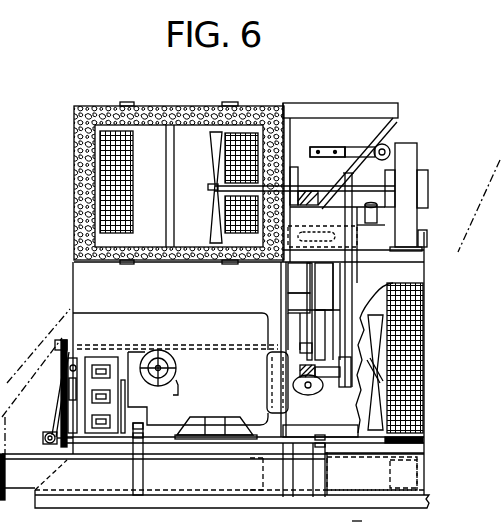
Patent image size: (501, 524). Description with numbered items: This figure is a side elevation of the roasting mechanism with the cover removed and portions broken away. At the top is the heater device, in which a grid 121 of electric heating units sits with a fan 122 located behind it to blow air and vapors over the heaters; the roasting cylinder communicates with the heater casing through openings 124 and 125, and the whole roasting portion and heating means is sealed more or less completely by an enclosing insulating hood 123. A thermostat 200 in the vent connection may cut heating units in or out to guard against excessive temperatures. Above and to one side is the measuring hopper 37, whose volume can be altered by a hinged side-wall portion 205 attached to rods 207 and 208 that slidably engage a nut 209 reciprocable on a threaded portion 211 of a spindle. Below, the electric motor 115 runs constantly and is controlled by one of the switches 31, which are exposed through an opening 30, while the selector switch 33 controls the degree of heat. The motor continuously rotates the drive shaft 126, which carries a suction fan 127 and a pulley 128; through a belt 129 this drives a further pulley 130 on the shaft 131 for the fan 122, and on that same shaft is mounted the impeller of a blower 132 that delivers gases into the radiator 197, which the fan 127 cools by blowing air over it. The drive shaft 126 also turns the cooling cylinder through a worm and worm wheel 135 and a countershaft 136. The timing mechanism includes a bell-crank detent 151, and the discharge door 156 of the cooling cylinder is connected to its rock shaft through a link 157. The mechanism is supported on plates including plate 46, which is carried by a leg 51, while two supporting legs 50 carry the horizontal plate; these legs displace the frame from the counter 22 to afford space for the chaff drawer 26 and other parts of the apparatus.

The counter 22 is at (190, 500).
The chaff drawer 26 is at (23, 487).
The opening 30 is at (118, 358).
The switches 31 is at (100, 365).
The selector switch 33 is at (174, 385).
The measuring hopper 37 is at (382, 113).
The plate 46 is at (280, 273).
The supporting legs 50 is at (320, 487).
The leg 51 is at (143, 478).
The electric motor 115 is at (243, 378).
The grid of electric heating units 121 is at (164, 131).
The fan 122 is at (214, 223).
The insulating hood 123 is at (143, 120).
The opening 124 is at (108, 128).
The opening 125 is at (245, 135).
The drive shaft 126 is at (298, 372).
The suction fan 127 is at (375, 428).
The pulley 128 is at (345, 390).
The belt 129 is at (350, 283).
The pulley 130 is at (353, 183).
The shaft 131 is at (313, 188).
The blower 132 is at (408, 150).
The worm and worm wheel 135 is at (296, 383).
The countershaft 136 is at (310, 327).
The bell-crank detent 151 is at (345, 520).
The discharge door 156 is at (55, 424).
The link 157 is at (55, 405).
The radiator 197 is at (407, 292).
The thermostat 200 is at (322, 242).
The hinged portion 205 is at (360, 128).
The rod 207 is at (343, 147).
The rod 208 is at (342, 62).
The nut 209 is at (388, 146).
The threaded portion 211 is at (377, 145).